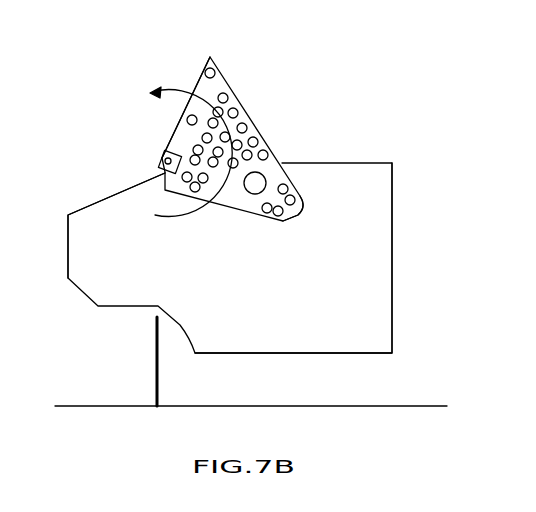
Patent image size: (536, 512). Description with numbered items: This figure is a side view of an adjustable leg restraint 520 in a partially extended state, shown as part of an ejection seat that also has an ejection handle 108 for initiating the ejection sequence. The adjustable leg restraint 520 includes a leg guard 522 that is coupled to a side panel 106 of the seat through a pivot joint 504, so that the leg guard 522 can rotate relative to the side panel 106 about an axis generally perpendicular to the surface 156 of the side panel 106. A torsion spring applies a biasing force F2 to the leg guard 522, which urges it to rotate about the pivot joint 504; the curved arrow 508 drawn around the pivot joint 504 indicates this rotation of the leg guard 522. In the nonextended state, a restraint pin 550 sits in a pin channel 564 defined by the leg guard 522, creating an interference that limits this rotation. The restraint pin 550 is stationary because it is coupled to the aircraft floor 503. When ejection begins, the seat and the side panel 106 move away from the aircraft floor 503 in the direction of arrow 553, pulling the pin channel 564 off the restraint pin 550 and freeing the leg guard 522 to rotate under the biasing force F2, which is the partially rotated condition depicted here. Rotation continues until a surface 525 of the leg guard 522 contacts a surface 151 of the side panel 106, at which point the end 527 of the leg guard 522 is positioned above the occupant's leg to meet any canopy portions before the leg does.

The side panel 106 is at (361, 174).
The ejection handle 108 is at (227, 132).
The surface of side panel 151 is at (92, 205).
The surface of side panel 156 is at (287, 297).
The aircraft floor 503 is at (417, 406).
The pivot joint 504 is at (162, 156).
The rotation arc 508 is at (173, 88).
The adjustable leg restraint 520 is at (121, 113).
The leg guard 522 is at (258, 143).
The surface of leg guard 525 is at (181, 119).
The end of leg guard 527 is at (301, 210).
The restraint pin 550 is at (155, 360).
The arrow 553 is at (268, 326).
The pin channel 564 is at (288, 223).
The biasing force F2 is at (156, 215).